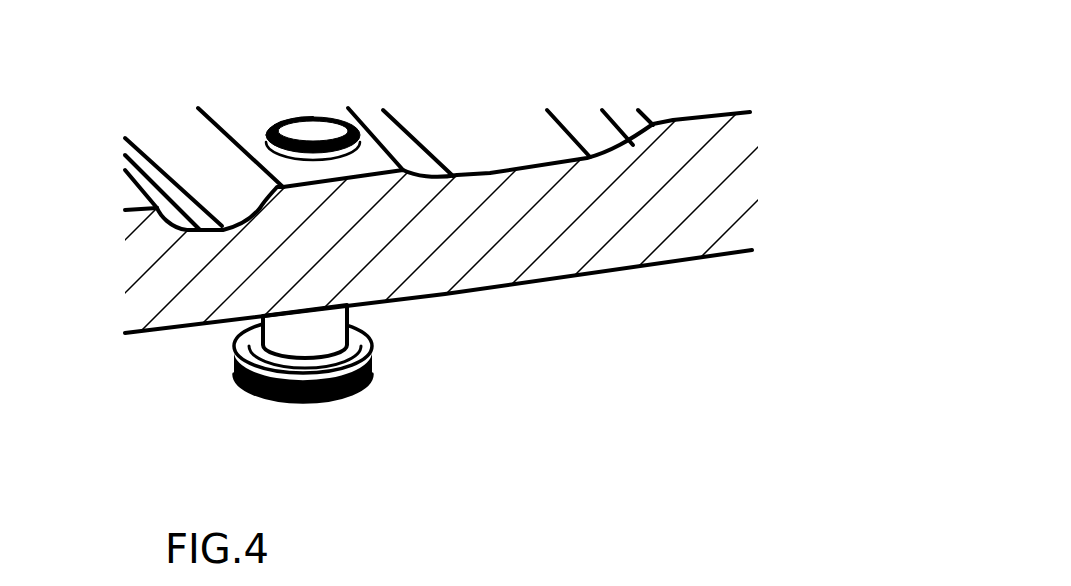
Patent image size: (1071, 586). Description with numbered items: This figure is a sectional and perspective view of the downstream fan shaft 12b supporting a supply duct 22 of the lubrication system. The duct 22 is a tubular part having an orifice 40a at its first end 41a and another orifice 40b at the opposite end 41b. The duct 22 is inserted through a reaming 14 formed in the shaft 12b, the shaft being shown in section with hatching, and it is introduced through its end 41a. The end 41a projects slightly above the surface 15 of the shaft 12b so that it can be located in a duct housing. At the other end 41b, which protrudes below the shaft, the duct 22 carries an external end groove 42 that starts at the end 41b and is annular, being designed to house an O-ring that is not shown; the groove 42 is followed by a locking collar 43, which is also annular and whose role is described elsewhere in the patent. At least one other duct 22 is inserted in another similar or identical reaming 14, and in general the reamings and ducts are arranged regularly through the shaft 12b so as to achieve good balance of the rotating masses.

The shaft 12b is at (710, 217).
The reaming 14 is at (325, 164).
The surface 15 is at (705, 100).
The duct 22 is at (222, 339).
The orifice 40a is at (323, 127).
The orifice 40b is at (323, 406).
The first end 41a is at (288, 116).
The opposite end 41b is at (303, 406).
The external end groove 42 is at (297, 405).
The locking collar 43 is at (373, 347).